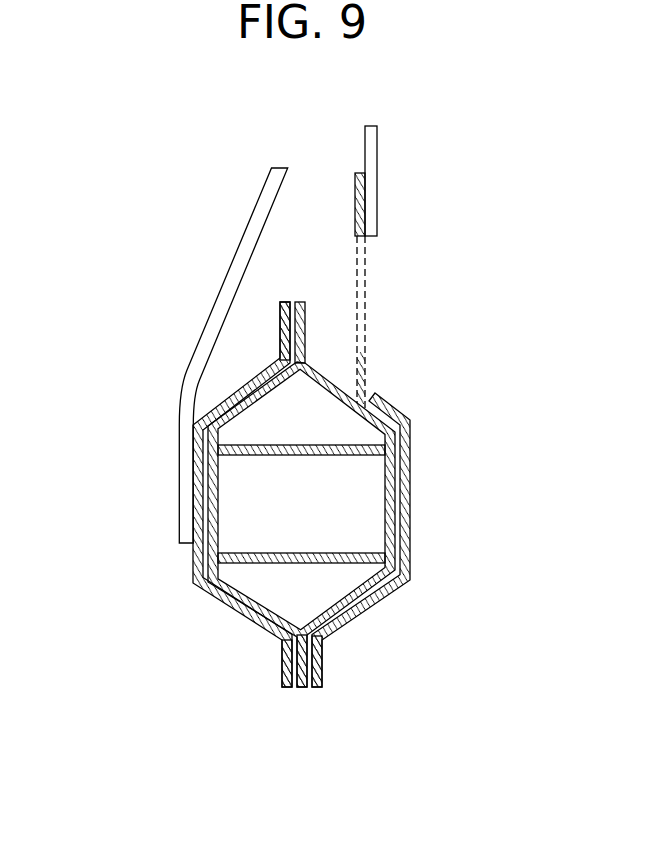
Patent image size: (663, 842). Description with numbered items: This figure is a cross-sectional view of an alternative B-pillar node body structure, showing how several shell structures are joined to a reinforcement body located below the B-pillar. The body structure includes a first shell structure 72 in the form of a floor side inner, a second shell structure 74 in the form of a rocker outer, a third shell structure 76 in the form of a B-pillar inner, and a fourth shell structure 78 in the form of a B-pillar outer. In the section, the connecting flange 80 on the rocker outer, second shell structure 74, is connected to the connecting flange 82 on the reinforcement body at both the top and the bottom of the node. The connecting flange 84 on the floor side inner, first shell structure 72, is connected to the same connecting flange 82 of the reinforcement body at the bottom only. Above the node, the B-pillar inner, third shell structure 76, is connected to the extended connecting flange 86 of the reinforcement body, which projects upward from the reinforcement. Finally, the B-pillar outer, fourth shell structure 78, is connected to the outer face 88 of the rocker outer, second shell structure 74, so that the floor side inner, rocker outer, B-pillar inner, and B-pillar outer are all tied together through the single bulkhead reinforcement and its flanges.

The first shell structure 72 is at (412, 500).
The second shell structure 74 is at (195, 576).
The third shell structure 76 is at (378, 177).
The fourth shell structure 78 is at (183, 386).
The connecting flange 80 is at (280, 318).
The connecting flange 82 is at (307, 316).
The connecting flange 84 is at (322, 678).
The extended connecting flange 86 is at (355, 190).
The outer face 88 is at (193, 466).